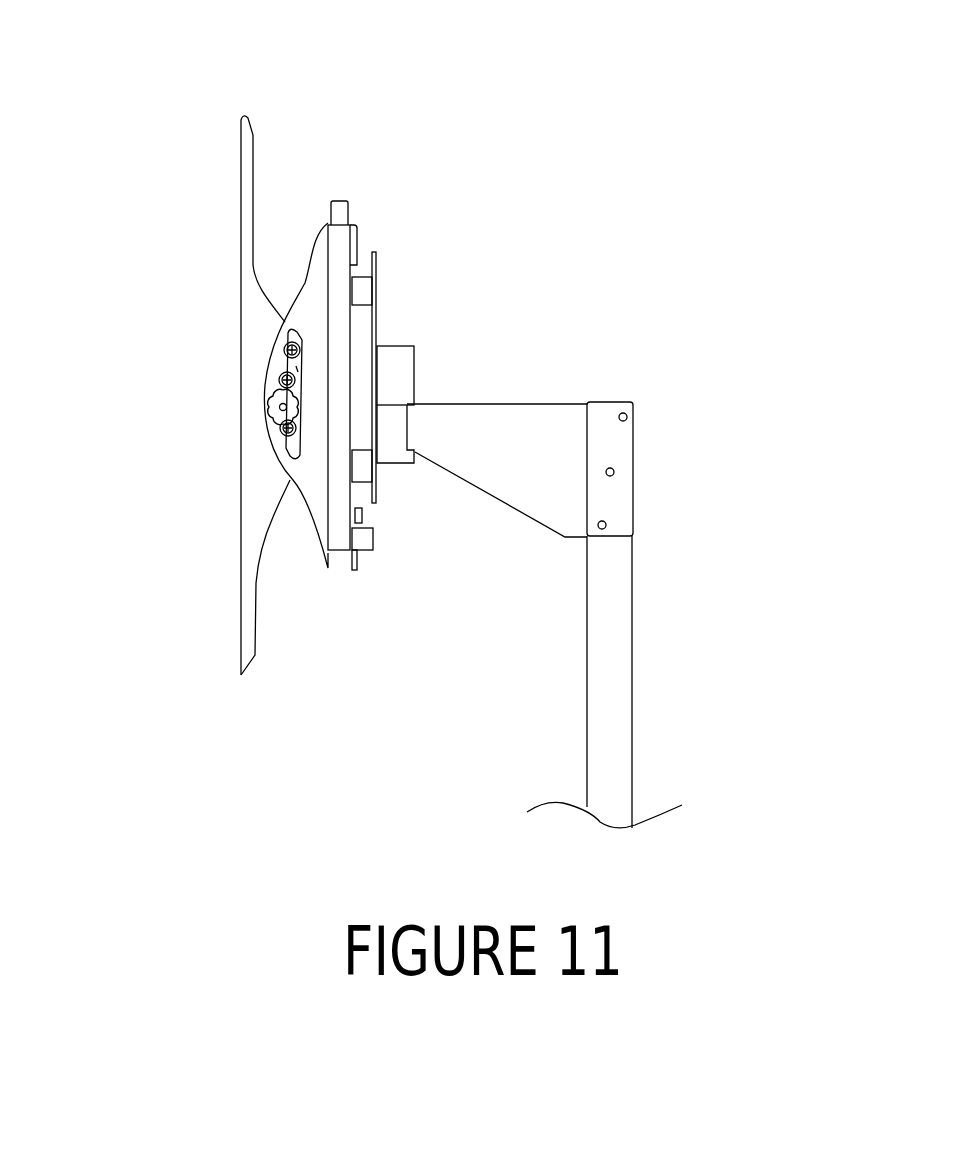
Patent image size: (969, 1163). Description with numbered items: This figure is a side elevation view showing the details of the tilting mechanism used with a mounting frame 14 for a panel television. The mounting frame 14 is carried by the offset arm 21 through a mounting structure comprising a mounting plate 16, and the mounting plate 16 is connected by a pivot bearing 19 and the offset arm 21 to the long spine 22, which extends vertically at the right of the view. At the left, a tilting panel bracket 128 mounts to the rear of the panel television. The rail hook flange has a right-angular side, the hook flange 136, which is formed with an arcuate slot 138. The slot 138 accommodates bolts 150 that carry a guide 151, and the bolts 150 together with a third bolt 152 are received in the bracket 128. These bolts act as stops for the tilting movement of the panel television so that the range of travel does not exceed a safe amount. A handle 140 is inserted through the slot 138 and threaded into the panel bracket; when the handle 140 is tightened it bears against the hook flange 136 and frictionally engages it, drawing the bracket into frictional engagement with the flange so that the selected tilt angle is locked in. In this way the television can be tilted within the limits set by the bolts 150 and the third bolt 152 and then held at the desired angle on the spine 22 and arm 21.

The tilting panel bracket 128 is at (252, 176).
The hook flange 136 is at (304, 301).
The guide 151 is at (299, 360).
The arcuate slot 138 is at (295, 370).
The pivot bearing 19 is at (409, 383).
The bolts 150 is at (281, 378).
The handle 140 is at (270, 410).
The third bolt 152 is at (281, 437).
The mounting frame 14 is at (343, 550).
The mounting plate 16 is at (378, 482).
The offset arm 21 is at (552, 473).
The long spine 22 is at (613, 647).